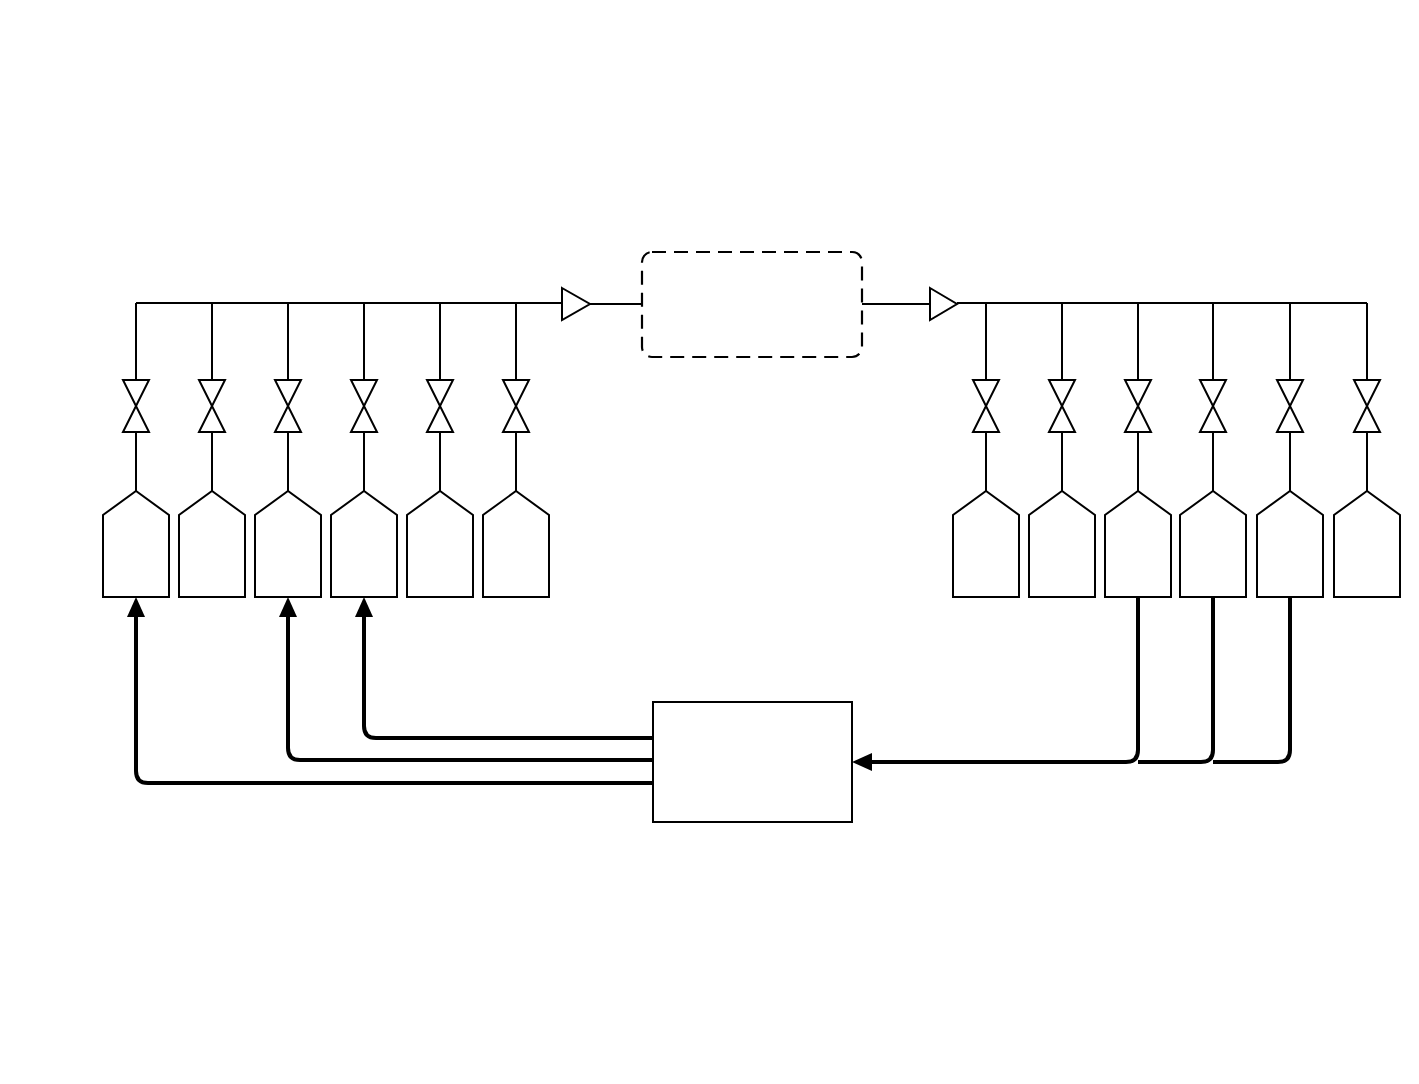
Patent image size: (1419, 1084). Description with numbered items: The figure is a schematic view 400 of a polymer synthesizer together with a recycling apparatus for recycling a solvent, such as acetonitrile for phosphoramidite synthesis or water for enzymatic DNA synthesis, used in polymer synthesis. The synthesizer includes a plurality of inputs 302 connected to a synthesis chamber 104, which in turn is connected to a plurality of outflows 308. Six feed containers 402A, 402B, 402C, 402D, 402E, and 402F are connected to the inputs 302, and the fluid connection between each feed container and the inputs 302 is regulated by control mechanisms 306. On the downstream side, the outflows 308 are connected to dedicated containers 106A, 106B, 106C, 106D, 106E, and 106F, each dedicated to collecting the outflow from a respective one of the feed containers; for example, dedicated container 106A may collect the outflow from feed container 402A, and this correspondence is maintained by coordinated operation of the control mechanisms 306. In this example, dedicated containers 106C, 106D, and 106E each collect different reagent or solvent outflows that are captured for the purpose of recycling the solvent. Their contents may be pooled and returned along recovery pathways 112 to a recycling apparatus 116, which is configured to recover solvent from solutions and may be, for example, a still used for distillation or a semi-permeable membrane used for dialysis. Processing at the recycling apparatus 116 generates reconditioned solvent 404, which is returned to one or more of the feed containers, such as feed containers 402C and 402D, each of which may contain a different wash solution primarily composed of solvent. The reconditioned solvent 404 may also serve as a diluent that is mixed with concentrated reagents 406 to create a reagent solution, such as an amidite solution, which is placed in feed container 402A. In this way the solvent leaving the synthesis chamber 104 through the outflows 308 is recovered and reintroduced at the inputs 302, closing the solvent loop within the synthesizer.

The schematic view 400 is at (190, 75).
The inputs 302 is at (389, 318).
The synthesis chamber 104 is at (770, 342).
The outflows 308 is at (1114, 319).
The control mechanisms 306 is at (970, 408).
The feed container 402A is at (159, 557).
The feed container 402B is at (235, 557).
The feed container 402C is at (311, 557).
The feed container 402D is at (387, 557).
The feed container 402E is at (463, 557).
The feed container 402F is at (539, 557).
The dedicated container 106A is at (1009, 557).
The dedicated container 106B is at (1085, 557).
The dedicated container 106C is at (1161, 557).
The dedicated container 106D is at (1236, 557).
The dedicated container 106E is at (1313, 557).
The dedicated container 106F is at (1390, 557).
The recycling apparatus 116 is at (772, 802).
The recovery pathways 112 is at (1071, 684).
The reconditioned solvent 404 is at (466, 678).
The concentrated reagents 406 is at (415, 840).